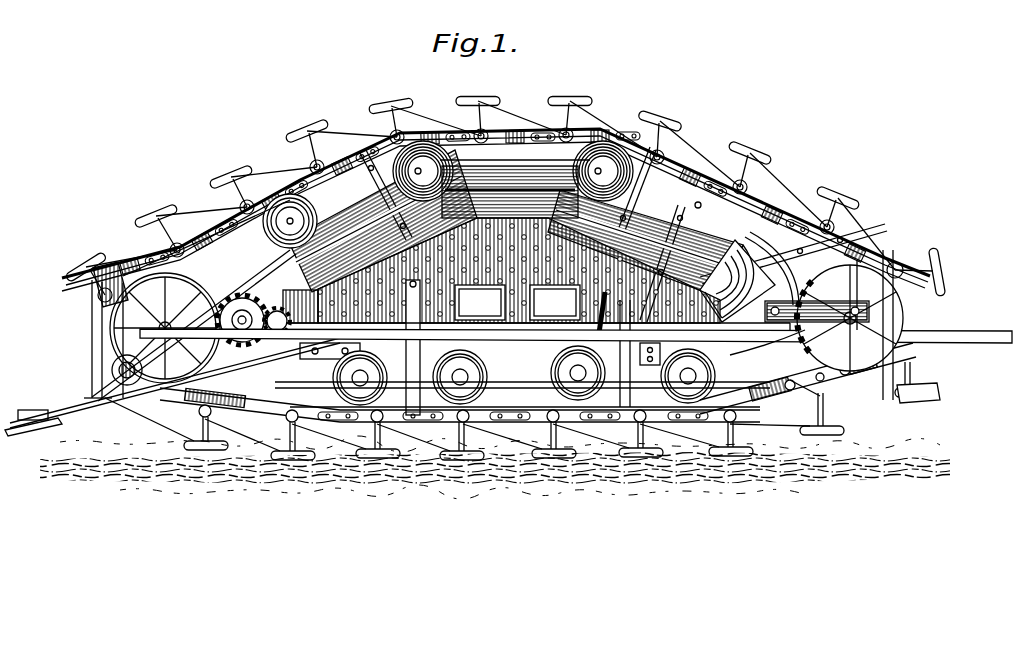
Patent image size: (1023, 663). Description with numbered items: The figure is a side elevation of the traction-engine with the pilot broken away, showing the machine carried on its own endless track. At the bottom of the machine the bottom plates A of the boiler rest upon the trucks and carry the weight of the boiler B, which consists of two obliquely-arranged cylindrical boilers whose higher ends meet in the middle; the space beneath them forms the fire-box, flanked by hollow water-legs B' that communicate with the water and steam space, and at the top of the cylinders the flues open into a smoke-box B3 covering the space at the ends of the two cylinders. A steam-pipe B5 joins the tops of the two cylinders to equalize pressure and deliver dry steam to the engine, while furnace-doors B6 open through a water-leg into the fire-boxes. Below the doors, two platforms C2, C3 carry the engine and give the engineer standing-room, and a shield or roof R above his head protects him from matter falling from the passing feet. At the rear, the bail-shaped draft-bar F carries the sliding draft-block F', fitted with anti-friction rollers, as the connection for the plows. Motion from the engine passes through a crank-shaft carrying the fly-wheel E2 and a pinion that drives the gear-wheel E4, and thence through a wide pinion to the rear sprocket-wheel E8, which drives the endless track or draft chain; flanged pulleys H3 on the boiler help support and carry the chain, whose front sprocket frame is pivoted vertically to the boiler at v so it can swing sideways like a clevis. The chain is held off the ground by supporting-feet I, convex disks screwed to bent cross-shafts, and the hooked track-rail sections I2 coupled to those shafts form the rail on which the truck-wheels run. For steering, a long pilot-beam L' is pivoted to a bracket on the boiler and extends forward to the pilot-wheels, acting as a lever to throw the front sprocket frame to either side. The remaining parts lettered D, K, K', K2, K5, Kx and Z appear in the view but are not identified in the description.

The bottom plates of the boiler A is at (535, 365).
The boiler B is at (531, 236).
The water-legs B' is at (519, 270).
The smoke-box B3 is at (510, 192).
The steam-pipe B5 is at (548, 190).
The furnace-doors B6 is at (517, 302).
The platform C2 is at (518, 347).
The platform C3 is at (522, 377).
The carrying wheels D is at (524, 375).
The fly-wheel E2 is at (521, 411).
The gear-wheel E4 is at (187, 335).
The sprocket-wheel E8 is at (205, 300).
The draft-bar F is at (175, 384).
The draft-block F' is at (33, 413).
The flanged pulleys H3 is at (448, 194).
The supporting-feet I is at (490, 178).
The track-rail sections I2 is at (616, 234).
The curved arm K is at (767, 293).
The rear lower rail K' is at (808, 378).
The rear gear wheel K2 is at (850, 315).
The slide K5 is at (813, 303).
The rear post Kx is at (902, 326).
The pilot-beam L' is at (576, 327).
The shield or roof R is at (515, 160).
The paddles Z is at (505, 200).
The pivot v is at (690, 207).